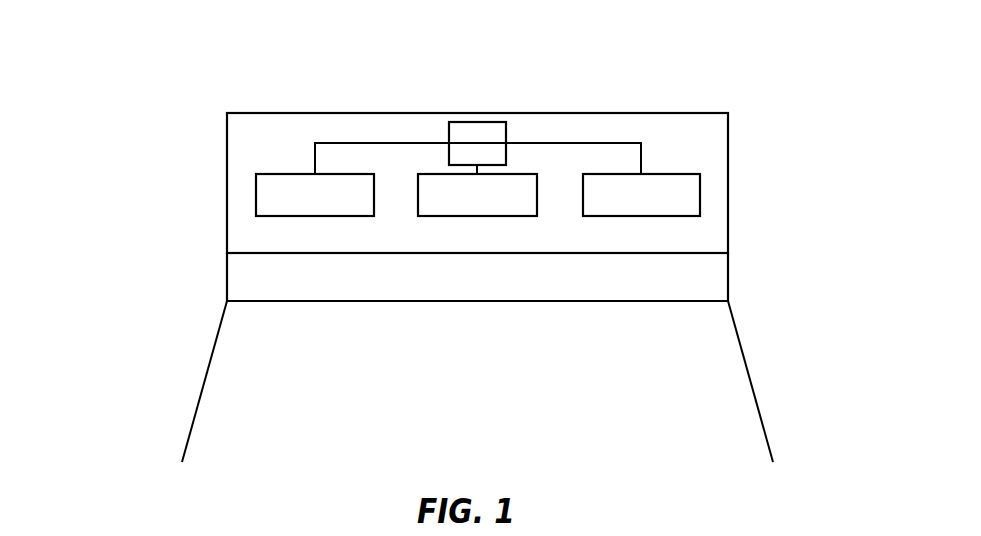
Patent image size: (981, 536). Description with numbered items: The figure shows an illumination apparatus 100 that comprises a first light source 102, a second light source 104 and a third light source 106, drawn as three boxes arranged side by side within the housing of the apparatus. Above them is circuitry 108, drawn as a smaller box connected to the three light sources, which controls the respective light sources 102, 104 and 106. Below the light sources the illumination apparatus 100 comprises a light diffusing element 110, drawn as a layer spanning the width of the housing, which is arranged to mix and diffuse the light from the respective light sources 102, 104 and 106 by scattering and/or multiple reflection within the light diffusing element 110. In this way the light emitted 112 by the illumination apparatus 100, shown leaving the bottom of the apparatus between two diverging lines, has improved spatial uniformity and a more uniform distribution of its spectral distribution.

The illumination apparatus 100 is at (185, 124).
The first light source 102 is at (347, 185).
The second light source 104 is at (514, 187).
The third light source 106 is at (671, 187).
The circuitry 108 is at (477, 143).
The light diffusing element 110 is at (713, 291).
The light emitted 112 is at (691, 359).